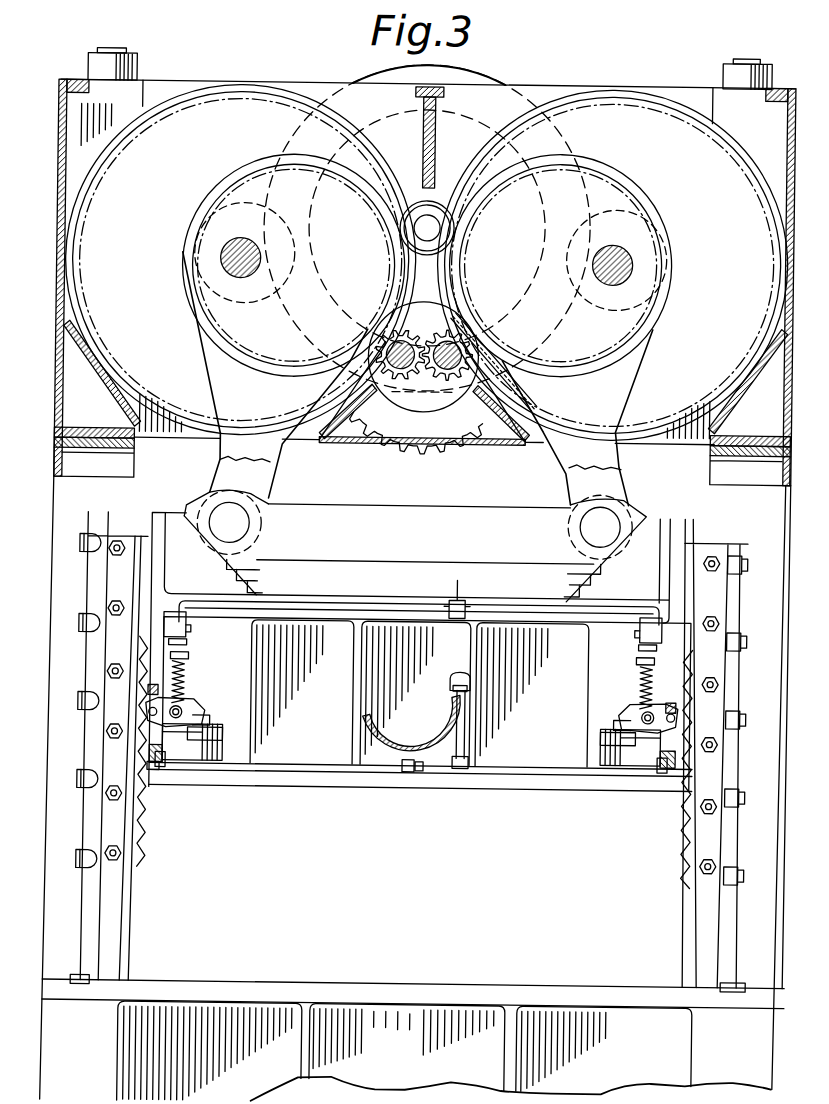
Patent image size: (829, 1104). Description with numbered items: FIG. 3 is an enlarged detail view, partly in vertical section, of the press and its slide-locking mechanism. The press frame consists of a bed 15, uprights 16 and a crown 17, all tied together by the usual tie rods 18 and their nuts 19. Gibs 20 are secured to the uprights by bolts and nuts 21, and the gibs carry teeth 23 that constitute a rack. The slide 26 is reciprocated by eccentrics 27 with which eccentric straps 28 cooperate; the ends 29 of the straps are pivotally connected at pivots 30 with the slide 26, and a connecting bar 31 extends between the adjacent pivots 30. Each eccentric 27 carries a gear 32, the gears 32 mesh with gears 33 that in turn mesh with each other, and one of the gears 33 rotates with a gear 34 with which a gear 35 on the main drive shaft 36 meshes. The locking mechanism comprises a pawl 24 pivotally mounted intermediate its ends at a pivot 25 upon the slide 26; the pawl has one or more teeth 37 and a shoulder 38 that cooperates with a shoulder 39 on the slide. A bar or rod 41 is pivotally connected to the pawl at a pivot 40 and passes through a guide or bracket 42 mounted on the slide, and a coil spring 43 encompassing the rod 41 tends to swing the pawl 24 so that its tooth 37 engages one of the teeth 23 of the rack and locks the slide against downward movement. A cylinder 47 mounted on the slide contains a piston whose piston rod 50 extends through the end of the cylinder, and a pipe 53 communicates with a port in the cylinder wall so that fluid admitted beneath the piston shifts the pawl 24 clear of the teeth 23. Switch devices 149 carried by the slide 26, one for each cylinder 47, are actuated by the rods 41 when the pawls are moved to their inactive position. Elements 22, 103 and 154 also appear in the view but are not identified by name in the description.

The bed 15 is at (445, 994).
The uprights 16 is at (134, 934).
The crown 17 is at (55, 166).
The tie rods 18 is at (106, 52).
The nuts 19 is at (82, 72).
The gibs 20 is at (108, 594).
The bolts and nuts 21 is at (109, 672).
The nut 22 is at (109, 678).
The teeth 23 is at (150, 829).
The pawl 24 is at (186, 711).
The pivot 25 is at (678, 723).
The slide 26 is at (308, 786).
The eccentrics 27 is at (275, 347).
The eccentric straps 28 is at (192, 301).
The ends of the straps 29 is at (265, 484).
The pivots 30 is at (240, 527).
The connecting bar 31 is at (452, 512).
The gear 32 is at (177, 406).
The gears 33 is at (400, 382).
The gear 34 is at (418, 455).
The gear 35 is at (438, 205).
The main drive shaft 36 is at (423, 224).
The teeth 37 is at (150, 743).
The shoulder 38 is at (170, 772).
The shoulder 39 is at (150, 762).
The pivot 40 is at (201, 722).
The bar or rod 41 is at (189, 655).
The guide or bracket 42 is at (191, 660).
The coil spring 43 is at (187, 685).
The cylinder 47 is at (226, 746).
The piston rod 50 is at (205, 729).
The pipe 53 is at (310, 770).
The hose 103 is at (383, 728).
The switch devices 149 is at (175, 618).
The bracket 154 is at (186, 638).